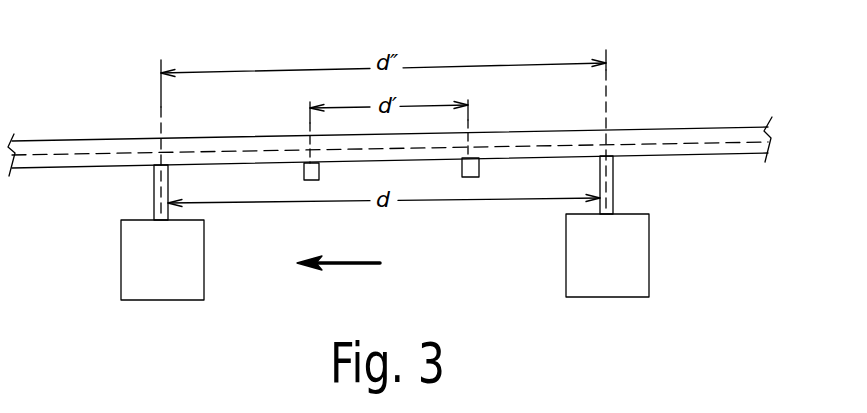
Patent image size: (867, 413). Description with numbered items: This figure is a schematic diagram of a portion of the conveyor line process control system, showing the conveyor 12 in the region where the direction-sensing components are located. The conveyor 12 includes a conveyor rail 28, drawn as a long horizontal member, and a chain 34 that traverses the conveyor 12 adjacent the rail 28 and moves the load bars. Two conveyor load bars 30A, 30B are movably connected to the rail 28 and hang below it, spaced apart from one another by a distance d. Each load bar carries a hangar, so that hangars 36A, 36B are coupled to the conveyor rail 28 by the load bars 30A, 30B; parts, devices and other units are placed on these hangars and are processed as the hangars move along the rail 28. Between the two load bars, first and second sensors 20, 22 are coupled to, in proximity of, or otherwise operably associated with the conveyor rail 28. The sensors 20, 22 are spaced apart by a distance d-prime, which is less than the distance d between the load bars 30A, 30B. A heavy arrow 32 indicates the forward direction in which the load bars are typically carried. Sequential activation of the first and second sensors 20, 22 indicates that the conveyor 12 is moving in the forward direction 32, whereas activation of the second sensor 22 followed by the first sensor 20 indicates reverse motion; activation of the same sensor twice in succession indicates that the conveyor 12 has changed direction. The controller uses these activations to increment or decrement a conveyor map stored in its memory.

The conveyor 12 is at (677, 128).
The conveyor rail 28 is at (721, 127).
The chain 34 is at (705, 143).
The conveyor load bar 30A is at (613, 185).
The conveyor load bar 30B is at (154, 186).
The hangar 36A is at (649, 262).
The hangar 36B is at (120, 258).
The first conveyor sensor 20 is at (480, 167).
The second conveyor sensor 22 is at (302, 170).
The forward direction arrow 32 is at (350, 266).